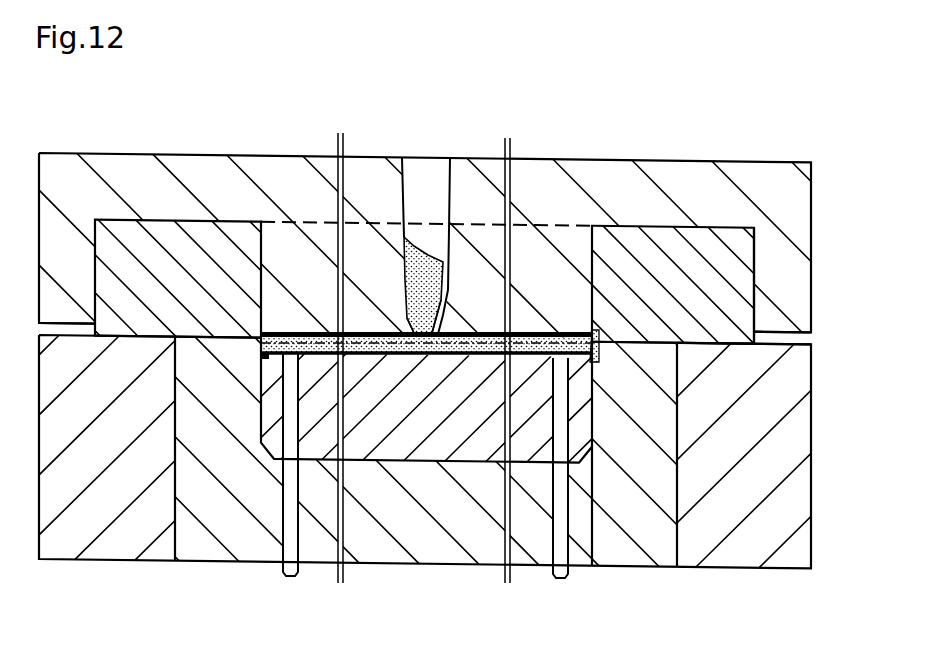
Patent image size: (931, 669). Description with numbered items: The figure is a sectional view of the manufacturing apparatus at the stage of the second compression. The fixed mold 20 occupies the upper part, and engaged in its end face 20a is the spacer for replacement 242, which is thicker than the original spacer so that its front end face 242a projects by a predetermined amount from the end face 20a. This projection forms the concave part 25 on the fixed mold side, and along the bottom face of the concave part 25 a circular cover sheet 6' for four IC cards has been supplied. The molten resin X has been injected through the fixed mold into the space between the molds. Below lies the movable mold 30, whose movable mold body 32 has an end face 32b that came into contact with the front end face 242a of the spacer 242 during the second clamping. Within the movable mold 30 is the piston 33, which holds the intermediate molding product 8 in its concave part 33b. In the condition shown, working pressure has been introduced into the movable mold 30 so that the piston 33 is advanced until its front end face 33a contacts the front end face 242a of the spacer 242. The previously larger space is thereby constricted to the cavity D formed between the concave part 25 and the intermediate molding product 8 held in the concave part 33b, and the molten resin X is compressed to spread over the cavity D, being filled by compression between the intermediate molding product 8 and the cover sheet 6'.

The fixed mold 20 is at (760, 157).
The spacer for replacement 242 is at (742, 252).
The front end face of the spacer for replacement 242a is at (756, 306).
The end face of the fixed mold 20a is at (792, 333).
The molten resin X is at (447, 305).
The cover sheet 6' is at (458, 213).
The concave part 25 is at (529, 332).
The cavity D is at (592, 336).
The movable mold 30 is at (787, 577).
The movable mold body 32 is at (747, 563).
The end face of the movable mold body 32b is at (797, 350).
The piston 33 is at (627, 563).
The intermediate molding product 8 is at (612, 343).
The concave part of the piston 33b is at (593, 563).
The front end face of the piston 33a is at (640, 343).